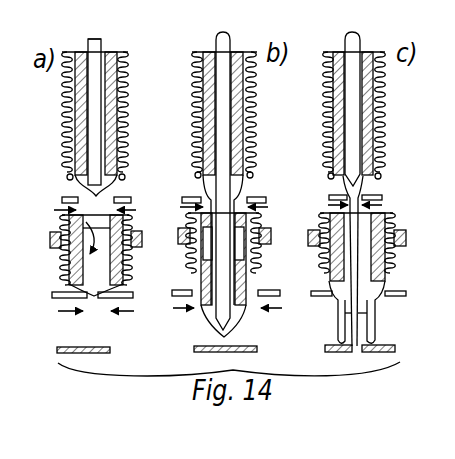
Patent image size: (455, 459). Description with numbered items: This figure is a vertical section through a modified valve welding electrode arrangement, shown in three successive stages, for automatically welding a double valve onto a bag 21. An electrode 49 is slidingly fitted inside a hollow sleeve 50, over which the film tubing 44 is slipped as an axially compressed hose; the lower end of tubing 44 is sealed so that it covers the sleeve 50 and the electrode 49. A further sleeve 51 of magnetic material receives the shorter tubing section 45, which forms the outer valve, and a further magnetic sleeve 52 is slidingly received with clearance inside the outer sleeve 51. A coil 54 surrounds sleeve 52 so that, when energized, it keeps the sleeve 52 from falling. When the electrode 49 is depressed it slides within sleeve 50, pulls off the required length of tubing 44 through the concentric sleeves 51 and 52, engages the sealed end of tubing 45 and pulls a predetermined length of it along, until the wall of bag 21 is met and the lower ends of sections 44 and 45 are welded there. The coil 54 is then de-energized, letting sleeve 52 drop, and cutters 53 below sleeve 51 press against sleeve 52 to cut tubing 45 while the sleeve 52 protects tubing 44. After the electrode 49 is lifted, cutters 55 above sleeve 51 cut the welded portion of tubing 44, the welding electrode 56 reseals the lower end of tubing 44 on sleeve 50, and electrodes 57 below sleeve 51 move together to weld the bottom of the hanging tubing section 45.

The bag 21 is at (90, 348).
The film tubing 44 is at (203, 51).
The outer component 45 is at (134, 224).
The electrode 49 is at (98, 52).
The hollow sleeve 50 is at (76, 51).
The sleeve of magnetic material 51 is at (128, 270).
The magnetic sleeve 52 is at (193, 342).
The cutters 53 is at (183, 317).
The coil 54 is at (52, 241).
The cutters 55 is at (374, 201).
The welding electrode 56 is at (65, 196).
The electrodes 57 is at (58, 299).